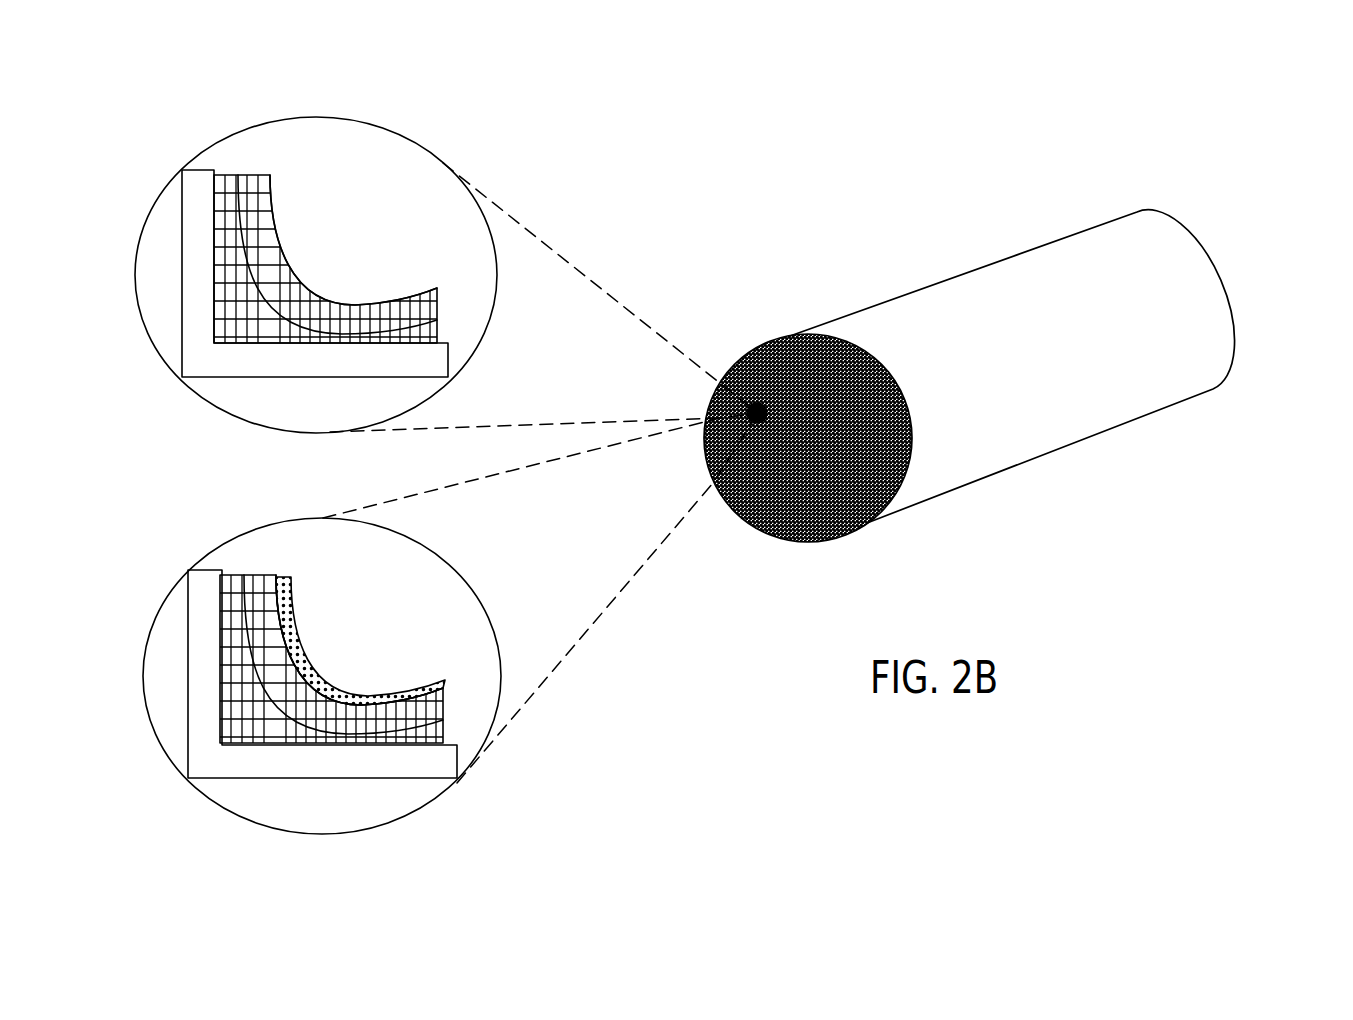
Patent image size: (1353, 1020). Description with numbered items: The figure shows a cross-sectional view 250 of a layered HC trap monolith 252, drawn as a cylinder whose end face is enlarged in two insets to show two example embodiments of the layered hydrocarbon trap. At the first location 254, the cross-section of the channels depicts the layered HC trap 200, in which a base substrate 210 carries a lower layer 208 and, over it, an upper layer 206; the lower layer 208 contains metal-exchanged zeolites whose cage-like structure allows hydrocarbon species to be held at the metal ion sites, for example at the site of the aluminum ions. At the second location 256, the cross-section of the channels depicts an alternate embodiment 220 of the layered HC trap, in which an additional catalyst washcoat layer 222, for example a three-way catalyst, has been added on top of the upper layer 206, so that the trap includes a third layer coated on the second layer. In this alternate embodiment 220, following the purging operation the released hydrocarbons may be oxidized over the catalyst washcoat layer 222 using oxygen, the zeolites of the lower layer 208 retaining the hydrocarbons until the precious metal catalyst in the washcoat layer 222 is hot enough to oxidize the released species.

The HC trap 200 is at (326, 234).
The upper layer 206 is at (252, 175).
The lower layer 208 is at (225, 175).
The base substrate 210 is at (186, 170).
The alternate embodiment 220 is at (335, 635).
The catalyst washcoat layer 222 is at (287, 577).
The cross-sectional view 250 is at (1279, 157).
The layered HC trap monolith 252 is at (940, 280).
The cross-section of the channels (first embodiment) 254 is at (667, 335).
The cross-section of the channels (alternate embodiment) 256 is at (597, 622).